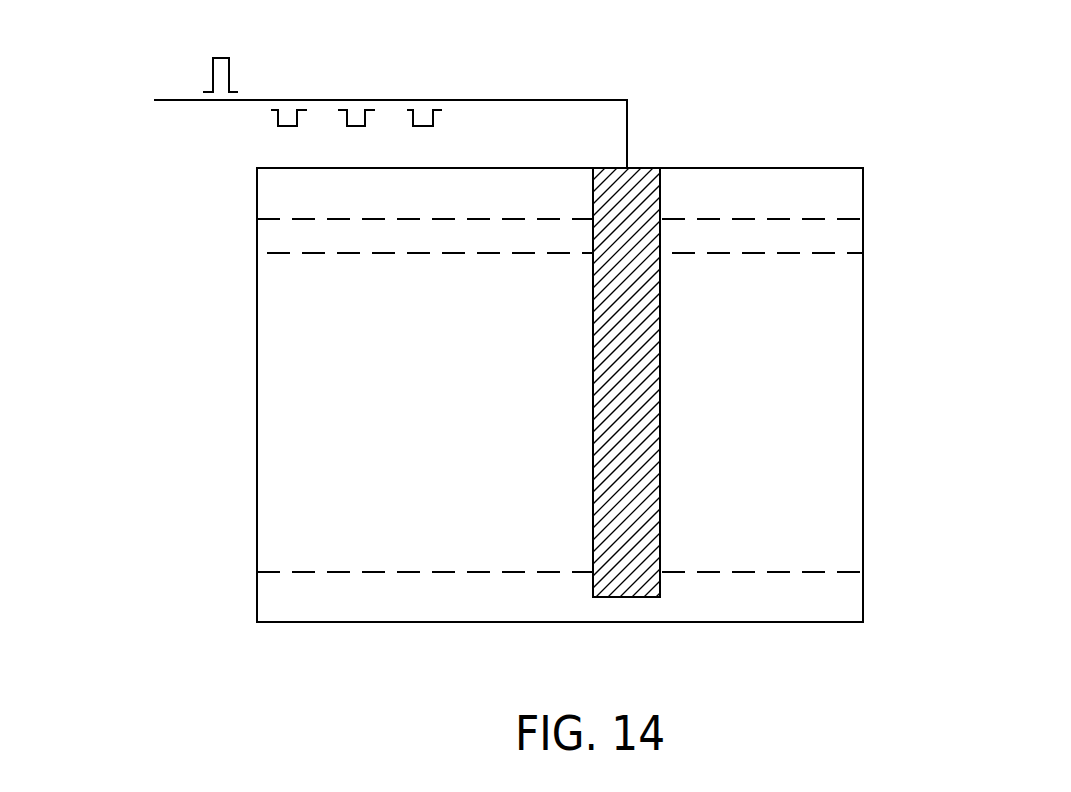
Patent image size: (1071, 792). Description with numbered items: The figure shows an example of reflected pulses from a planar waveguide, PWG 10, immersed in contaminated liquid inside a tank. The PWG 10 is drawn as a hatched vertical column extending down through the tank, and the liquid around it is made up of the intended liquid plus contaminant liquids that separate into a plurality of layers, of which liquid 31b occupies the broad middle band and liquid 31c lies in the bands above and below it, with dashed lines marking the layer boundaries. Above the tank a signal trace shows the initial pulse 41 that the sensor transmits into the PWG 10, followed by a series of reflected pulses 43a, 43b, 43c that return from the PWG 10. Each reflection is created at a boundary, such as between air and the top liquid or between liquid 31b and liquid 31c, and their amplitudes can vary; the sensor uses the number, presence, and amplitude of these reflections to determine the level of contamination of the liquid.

The PWG 10 is at (661, 419).
The liquid 31b is at (473, 430).
The liquid 31c is at (458, 246).
The initial pulse 41 is at (200, 75).
The reflected pulse 43a is at (268, 128).
The reflected pulse 43b is at (356, 118).
The reflected pulse 43c is at (424, 118).